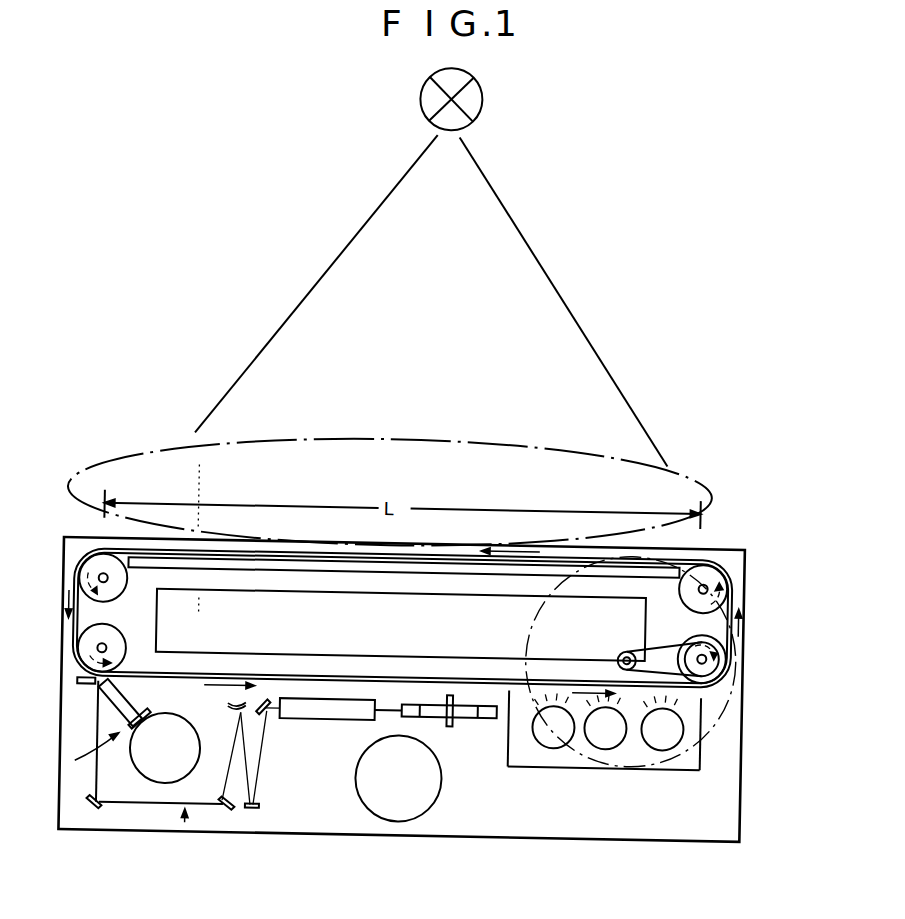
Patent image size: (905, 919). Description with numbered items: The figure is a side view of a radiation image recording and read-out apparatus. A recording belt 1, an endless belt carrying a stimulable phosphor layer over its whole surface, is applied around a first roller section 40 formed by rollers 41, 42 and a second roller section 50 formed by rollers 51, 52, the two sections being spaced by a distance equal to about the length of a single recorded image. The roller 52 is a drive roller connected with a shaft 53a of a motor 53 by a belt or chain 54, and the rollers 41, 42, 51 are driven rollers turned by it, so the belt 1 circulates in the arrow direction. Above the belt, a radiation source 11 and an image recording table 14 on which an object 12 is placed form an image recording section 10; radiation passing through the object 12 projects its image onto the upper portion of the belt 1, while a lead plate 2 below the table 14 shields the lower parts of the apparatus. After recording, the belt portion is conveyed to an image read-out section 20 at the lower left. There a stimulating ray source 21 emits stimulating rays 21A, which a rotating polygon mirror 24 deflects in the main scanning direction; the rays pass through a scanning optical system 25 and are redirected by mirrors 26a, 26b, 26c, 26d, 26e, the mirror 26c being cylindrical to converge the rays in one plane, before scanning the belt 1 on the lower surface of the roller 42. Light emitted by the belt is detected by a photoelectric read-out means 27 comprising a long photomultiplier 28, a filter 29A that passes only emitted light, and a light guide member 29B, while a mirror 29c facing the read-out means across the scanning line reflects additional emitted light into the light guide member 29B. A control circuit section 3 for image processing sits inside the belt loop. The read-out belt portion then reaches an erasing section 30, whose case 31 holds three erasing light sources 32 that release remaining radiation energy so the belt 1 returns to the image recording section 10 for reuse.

The recording belt 1 is at (347, 535).
The lead plate 2 is at (427, 531).
The control circuit section 3 is at (421, 629).
The image recording section 10 is at (319, 228).
The radiation source 11 is at (474, 100).
The object 12 is at (423, 441).
The image recording table 14 is at (287, 536).
The image read-out section 20 is at (194, 838).
The stimulating ray source 21 is at (430, 801).
The stimulating rays 21A is at (387, 702).
The rotating polygon mirror 24 is at (468, 712).
The scanning optical system 25 is at (332, 705).
The mirror 26a is at (270, 699).
The mirror 26b is at (258, 811).
The cylindrical mirror 26c is at (229, 702).
The mirror 26d is at (230, 809).
The mirror 26e is at (98, 819).
The photoelectric read-out means 27 is at (91, 759).
The photomultiplier 28 is at (191, 757).
The filter 29A is at (153, 701).
The light guide member 29B is at (133, 670).
The mirror 29c is at (81, 684).
The erasing section 30 is at (610, 765).
The case 31 is at (662, 759).
The erasing light source 32 is at (552, 742).
The first roller section 40 is at (95, 614).
The roller 41 is at (119, 581).
The roller 42 is at (84, 648).
The second roller section 50 is at (741, 577).
The roller 51 is at (709, 570).
The drive roller 52 is at (724, 651).
The motor 53 is at (714, 714).
The shaft 53a is at (626, 644).
The belt or chain 54 is at (664, 630).